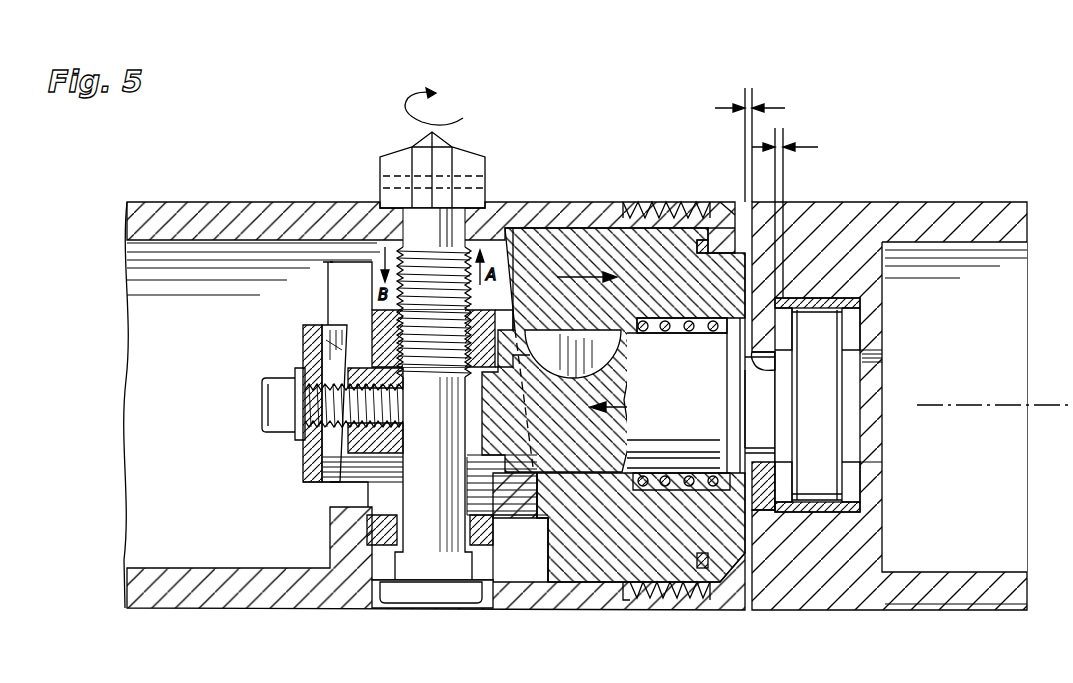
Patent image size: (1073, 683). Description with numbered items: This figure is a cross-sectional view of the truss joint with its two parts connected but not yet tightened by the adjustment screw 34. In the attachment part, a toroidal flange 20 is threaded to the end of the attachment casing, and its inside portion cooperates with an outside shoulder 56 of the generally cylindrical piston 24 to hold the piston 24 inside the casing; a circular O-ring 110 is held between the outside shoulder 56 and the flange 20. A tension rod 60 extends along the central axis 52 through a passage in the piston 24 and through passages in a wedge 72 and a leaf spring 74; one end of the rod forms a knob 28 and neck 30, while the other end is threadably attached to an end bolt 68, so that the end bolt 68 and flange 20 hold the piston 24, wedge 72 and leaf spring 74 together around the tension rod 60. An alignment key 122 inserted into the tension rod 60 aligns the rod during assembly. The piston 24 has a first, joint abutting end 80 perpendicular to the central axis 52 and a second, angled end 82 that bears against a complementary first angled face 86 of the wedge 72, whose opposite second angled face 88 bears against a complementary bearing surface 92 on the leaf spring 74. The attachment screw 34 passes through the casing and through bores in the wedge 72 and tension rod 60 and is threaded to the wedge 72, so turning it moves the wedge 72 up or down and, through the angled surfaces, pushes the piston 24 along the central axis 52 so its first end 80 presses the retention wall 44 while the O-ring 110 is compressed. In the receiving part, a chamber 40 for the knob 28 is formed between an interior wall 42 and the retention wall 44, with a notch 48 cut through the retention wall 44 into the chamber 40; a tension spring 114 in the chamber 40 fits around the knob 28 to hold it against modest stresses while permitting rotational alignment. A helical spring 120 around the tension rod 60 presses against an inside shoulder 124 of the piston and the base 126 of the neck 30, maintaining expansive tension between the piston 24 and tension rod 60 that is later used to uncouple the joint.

The toroidal flange 20 is at (668, 202).
The piston 24 is at (644, 587).
The knob 28 is at (830, 398).
The neck 30 is at (772, 410).
The adjustment screw 34 is at (440, 470).
The chamber 40 is at (865, 306).
The interior wall 42 is at (873, 334).
The retention wall 44 is at (768, 480).
The notch 48 is at (770, 366).
The central axis 52 is at (1003, 404).
The outside shoulder 56 is at (733, 210).
The tension rod 60 is at (613, 350).
The end bolt 68 is at (262, 419).
The wedge 72 is at (362, 490).
The leaf spring 74 is at (303, 357).
The first, joint abutting end 80 is at (746, 541).
The second, angled end 82 is at (540, 508).
The first angled face 86 is at (548, 512).
The second angled face 88 is at (303, 335).
The bearing surface 92 is at (368, 328).
The circular O-ring 110 is at (700, 556).
The tension spring 114 is at (833, 512).
The helical spring 120 is at (665, 322).
The alignment key 122 is at (603, 340).
The inside shoulder 124 is at (652, 492).
The base of the neck 126 is at (718, 328).